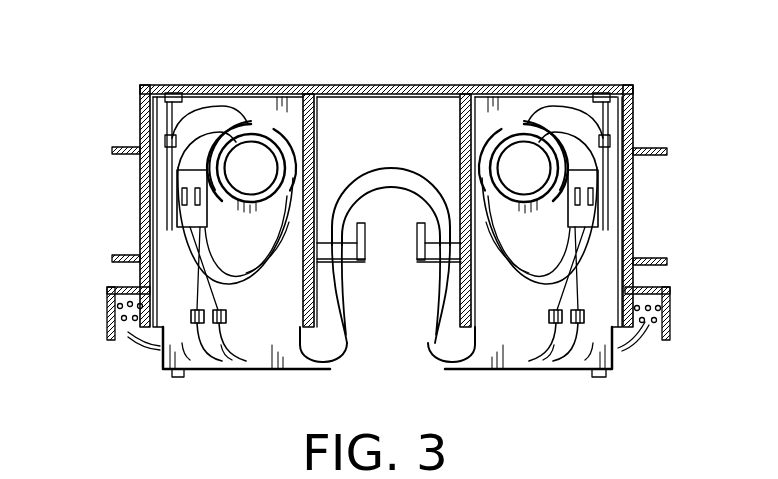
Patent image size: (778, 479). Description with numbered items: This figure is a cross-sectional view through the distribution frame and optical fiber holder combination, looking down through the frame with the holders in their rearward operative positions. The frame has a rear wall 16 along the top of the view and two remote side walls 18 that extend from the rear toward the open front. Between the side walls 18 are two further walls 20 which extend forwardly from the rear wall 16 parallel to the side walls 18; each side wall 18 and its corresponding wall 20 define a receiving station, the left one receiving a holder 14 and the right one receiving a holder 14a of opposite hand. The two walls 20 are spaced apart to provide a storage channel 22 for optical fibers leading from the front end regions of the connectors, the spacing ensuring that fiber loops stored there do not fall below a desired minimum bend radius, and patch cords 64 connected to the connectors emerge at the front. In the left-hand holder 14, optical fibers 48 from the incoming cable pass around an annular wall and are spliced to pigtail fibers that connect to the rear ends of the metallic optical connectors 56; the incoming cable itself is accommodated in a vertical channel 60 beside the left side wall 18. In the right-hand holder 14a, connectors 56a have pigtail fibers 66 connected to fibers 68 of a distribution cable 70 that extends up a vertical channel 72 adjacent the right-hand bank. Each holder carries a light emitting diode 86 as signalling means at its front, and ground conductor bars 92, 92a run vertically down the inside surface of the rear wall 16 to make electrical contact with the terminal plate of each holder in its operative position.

The holder 14 is at (277, 371).
The holder 14a is at (475, 372).
The rear wall 16 is at (349, 85).
The side walls 18 is at (140, 105).
The walls 20 is at (317, 113).
The storage channel 22 is at (407, 224).
The optical fibers 48 is at (223, 130).
The optical connectors 56 is at (228, 317).
The connectors 56a is at (533, 330).
The vertical channel 60 is at (107, 297).
The patch cords 64 is at (350, 320).
The pigtail fibers 66 is at (547, 312).
The fibers 68 is at (512, 118).
The distribution cable 70 is at (652, 323).
The vertical channel 72 is at (672, 308).
The light emitting diode 86 is at (177, 378).
The ground conductor bar 92 is at (175, 92).
The ground conductor bar 92a is at (600, 93).